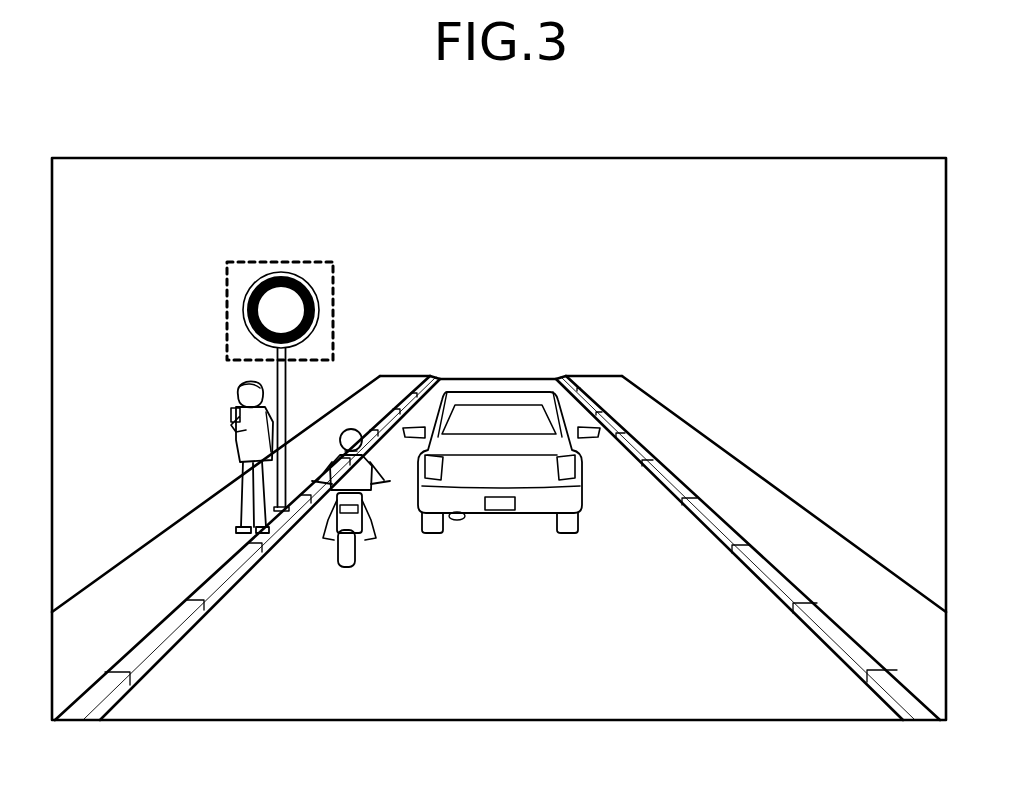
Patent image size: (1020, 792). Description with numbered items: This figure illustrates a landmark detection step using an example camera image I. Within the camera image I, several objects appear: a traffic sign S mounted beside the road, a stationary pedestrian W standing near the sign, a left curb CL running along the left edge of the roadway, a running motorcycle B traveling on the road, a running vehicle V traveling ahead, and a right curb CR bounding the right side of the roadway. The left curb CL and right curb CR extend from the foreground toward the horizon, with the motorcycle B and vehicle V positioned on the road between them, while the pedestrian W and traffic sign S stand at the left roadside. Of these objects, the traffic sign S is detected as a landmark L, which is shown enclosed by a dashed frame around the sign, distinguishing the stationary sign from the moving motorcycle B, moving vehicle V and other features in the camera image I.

The camera image I is at (500, 158).
The traffic sign S is at (216, 308).
The landmark L is at (340, 290).
The stationary pedestrian W is at (219, 436).
The left curb CL is at (224, 612).
The running motorcycle B is at (368, 575).
The running vehicle V is at (507, 556).
The right curb CR is at (777, 613).